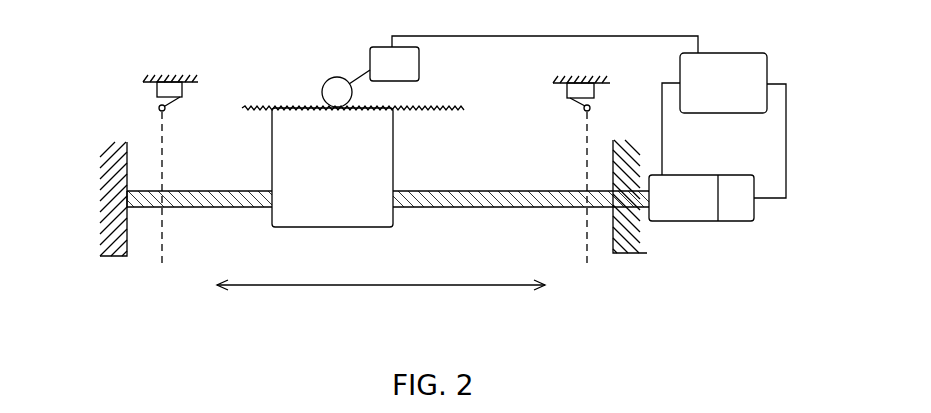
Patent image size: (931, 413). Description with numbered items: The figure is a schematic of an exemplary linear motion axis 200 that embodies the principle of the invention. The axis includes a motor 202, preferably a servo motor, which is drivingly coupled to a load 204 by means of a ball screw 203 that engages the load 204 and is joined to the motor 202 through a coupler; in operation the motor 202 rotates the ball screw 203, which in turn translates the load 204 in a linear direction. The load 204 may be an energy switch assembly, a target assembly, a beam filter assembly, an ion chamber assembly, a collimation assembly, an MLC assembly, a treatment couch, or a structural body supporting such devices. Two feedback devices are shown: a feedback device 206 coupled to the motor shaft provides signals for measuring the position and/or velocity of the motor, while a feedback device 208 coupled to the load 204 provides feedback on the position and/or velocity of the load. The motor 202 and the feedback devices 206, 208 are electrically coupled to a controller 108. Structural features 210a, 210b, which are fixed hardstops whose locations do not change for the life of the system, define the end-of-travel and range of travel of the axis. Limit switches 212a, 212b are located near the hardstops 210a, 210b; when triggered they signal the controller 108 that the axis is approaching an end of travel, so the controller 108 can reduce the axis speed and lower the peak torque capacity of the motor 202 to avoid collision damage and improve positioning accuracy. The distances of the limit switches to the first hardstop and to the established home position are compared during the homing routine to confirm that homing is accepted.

The linear motion axis 200 is at (303, 45).
The controller 108 is at (767, 65).
The motor 202 is at (680, 216).
The ball screw 203 is at (475, 208).
The load 204 is at (335, 228).
The feedback device 206 is at (735, 216).
The feedback device 208 is at (419, 68).
The structural feature (first hardstop) 210a is at (630, 255).
The structural feature (hardstop) 210b is at (107, 258).
The limit switch 212a is at (567, 90).
The limit switch 212b is at (157, 90).